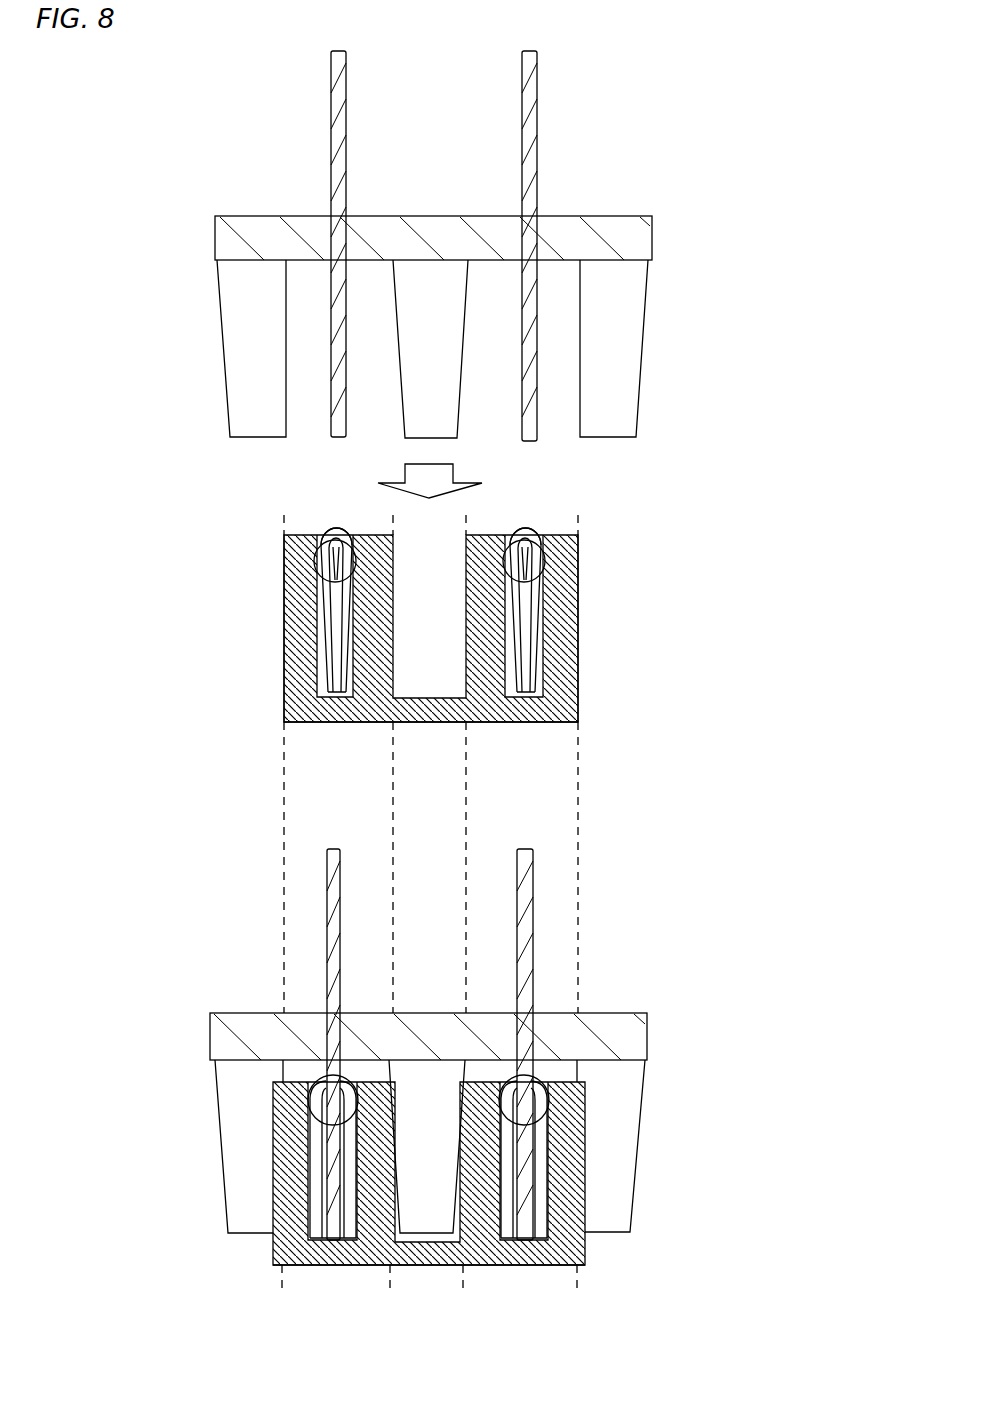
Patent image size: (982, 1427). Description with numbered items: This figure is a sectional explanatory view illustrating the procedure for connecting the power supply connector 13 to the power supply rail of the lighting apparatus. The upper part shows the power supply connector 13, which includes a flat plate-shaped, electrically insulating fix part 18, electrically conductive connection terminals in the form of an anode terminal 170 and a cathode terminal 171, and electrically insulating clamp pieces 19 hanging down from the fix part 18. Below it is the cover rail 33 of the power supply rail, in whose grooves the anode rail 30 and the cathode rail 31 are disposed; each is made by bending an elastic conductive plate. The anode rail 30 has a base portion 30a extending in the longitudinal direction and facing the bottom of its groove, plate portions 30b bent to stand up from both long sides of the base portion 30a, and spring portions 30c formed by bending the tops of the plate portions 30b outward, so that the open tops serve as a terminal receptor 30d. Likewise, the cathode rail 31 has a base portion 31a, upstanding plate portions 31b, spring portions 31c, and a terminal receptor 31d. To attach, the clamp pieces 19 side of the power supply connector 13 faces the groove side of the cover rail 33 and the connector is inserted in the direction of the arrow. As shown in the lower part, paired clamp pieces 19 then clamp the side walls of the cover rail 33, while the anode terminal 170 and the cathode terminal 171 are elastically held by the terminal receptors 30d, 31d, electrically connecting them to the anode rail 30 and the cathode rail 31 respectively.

The power supply connector 13 is at (409, 674).
The fix part 18 is at (640, 237).
The clamp pieces 19 is at (430, 375).
The anode terminal 170 is at (341, 139).
The cathode terminal 171 is at (527, 163).
The anode rail 30 is at (332, 605).
The base portion 30a is at (290, 713).
The plate portions 30b is at (290, 652).
The spring portions 30c is at (323, 537).
The terminal receptor 30d is at (290, 544).
The cathode rail 31 is at (540, 596).
The base portion 31a is at (578, 700).
The plate portions 31b is at (540, 660).
The spring portions 31c is at (532, 537).
The terminal receptor 31d is at (578, 537).
The cover rail 33 is at (578, 633).